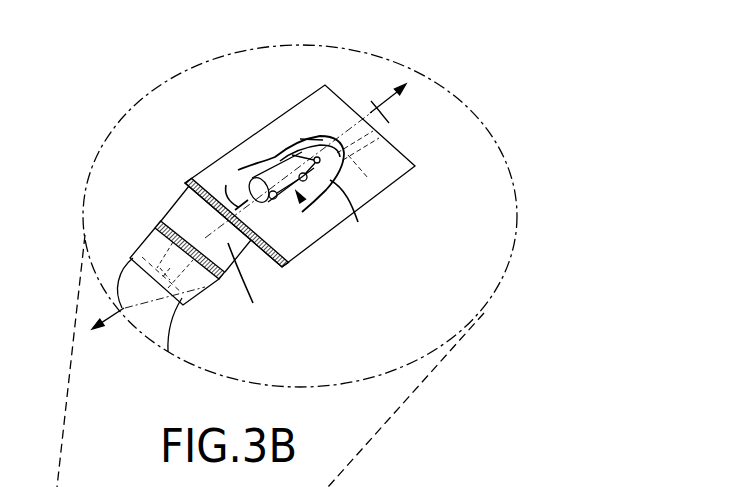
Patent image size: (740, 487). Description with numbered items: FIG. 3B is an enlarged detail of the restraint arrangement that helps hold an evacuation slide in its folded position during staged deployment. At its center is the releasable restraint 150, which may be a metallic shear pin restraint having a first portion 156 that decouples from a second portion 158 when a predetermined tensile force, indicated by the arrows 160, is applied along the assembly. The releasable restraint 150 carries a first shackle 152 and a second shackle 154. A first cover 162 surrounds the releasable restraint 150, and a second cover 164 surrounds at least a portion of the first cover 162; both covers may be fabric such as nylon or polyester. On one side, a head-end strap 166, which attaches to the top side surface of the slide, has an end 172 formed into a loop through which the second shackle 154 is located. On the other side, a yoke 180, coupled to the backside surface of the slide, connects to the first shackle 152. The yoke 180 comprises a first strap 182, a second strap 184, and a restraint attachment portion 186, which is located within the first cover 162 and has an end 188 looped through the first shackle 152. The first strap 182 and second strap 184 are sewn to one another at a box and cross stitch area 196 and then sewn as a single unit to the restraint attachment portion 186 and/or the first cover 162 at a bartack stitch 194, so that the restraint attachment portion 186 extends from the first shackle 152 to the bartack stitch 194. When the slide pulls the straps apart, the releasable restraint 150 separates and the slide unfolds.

The releasable restraint 150 is at (302, 201).
The first shackle 152 is at (267, 204).
The second shackle 154 is at (335, 180).
The first portion 156 is at (264, 158).
The second portion 158 is at (290, 147).
The arrows 160 is at (110, 326).
The first cover 162 is at (184, 208).
The second cover 164 is at (396, 170).
The head-end strap 166 is at (385, 120).
The end 172 is at (322, 138).
The yoke 180 is at (120, 181).
The first strap 182 is at (118, 276).
The second strap 184 is at (170, 320).
The restraint attachment portion 186 is at (253, 303).
The end 188 is at (226, 185).
The bartack stitch 194 is at (165, 225).
The box and cross stitch area 196 is at (198, 283).